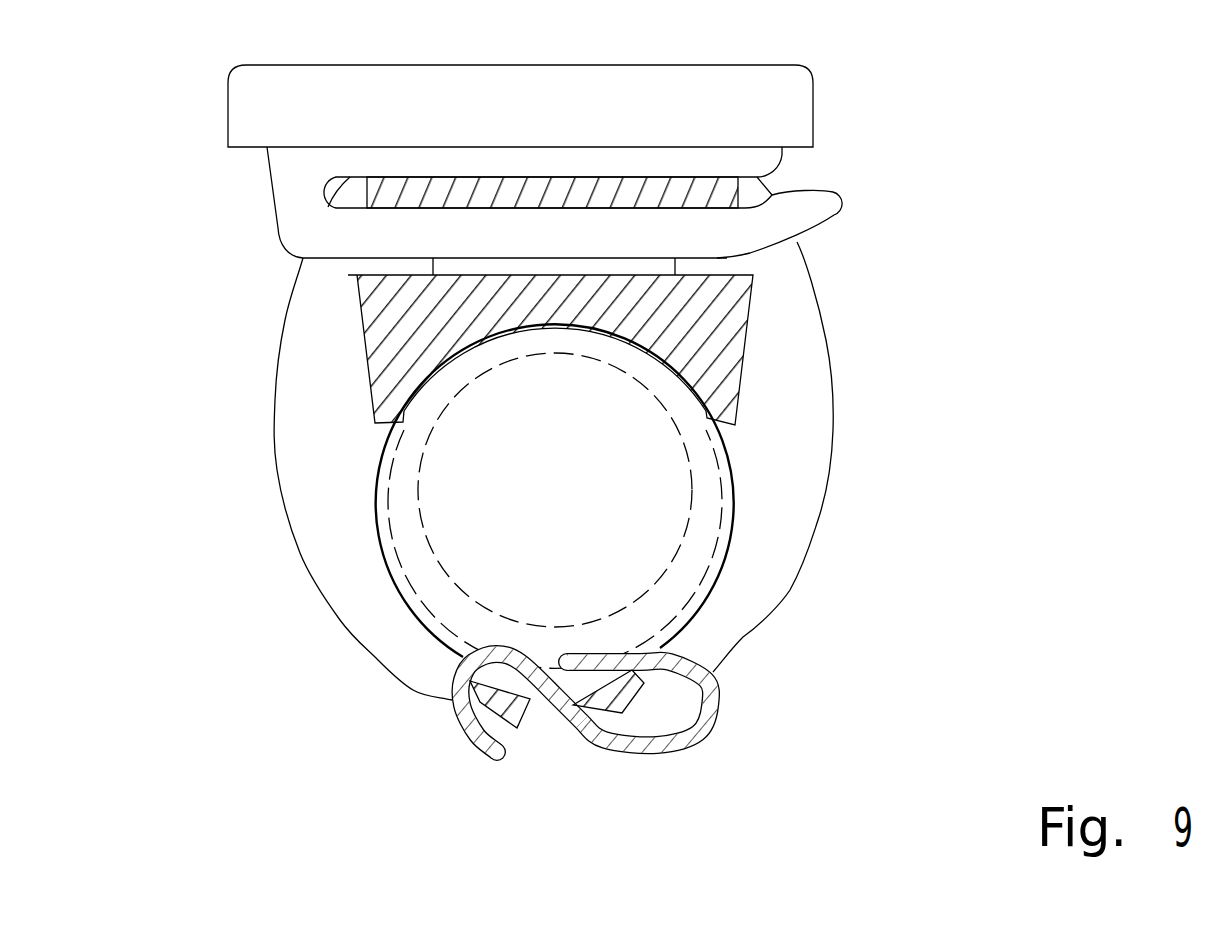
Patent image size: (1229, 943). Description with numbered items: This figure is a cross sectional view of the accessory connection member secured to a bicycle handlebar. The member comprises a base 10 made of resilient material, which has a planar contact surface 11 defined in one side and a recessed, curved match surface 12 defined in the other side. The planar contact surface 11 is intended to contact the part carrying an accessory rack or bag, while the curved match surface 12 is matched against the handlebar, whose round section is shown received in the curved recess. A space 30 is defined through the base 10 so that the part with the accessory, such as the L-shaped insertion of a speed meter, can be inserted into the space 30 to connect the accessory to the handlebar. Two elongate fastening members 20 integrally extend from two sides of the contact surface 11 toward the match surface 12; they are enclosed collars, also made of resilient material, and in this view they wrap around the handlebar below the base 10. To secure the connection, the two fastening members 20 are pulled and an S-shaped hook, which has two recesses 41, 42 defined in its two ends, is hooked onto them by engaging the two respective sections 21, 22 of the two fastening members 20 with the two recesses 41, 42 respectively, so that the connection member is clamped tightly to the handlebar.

The base 10 is at (619, 245).
The planar contact surface 11 is at (627, 177).
The match surface 12 is at (657, 353).
The fastening members 20 is at (300, 554).
The section 21 is at (473, 688).
The section 22 is at (613, 692).
The space 30 is at (505, 267).
The recess 41 is at (452, 720).
The recess 42 is at (683, 724).